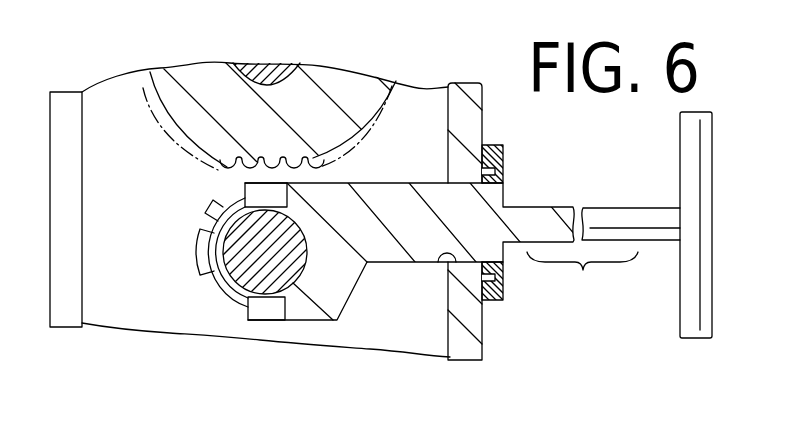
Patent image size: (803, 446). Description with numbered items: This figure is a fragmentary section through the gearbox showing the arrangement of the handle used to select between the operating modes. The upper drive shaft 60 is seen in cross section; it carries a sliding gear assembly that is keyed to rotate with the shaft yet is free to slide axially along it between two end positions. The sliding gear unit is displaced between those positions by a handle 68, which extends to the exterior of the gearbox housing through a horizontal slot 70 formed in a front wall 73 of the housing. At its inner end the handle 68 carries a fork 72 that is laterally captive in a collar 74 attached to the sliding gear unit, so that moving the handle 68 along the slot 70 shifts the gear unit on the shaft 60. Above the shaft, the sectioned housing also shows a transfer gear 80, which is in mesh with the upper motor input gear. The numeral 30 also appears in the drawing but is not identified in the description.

The mounting flange 30 is at (490, 104).
The upper drive shaft 60 is at (230, 260).
The handle 68 is at (697, 262).
The horizontal slot 70 is at (433, 262).
The fork 72 is at (258, 305).
The front wall 73 is at (487, 322).
The collar 74 is at (232, 212).
The transfer gear 80 is at (205, 122).